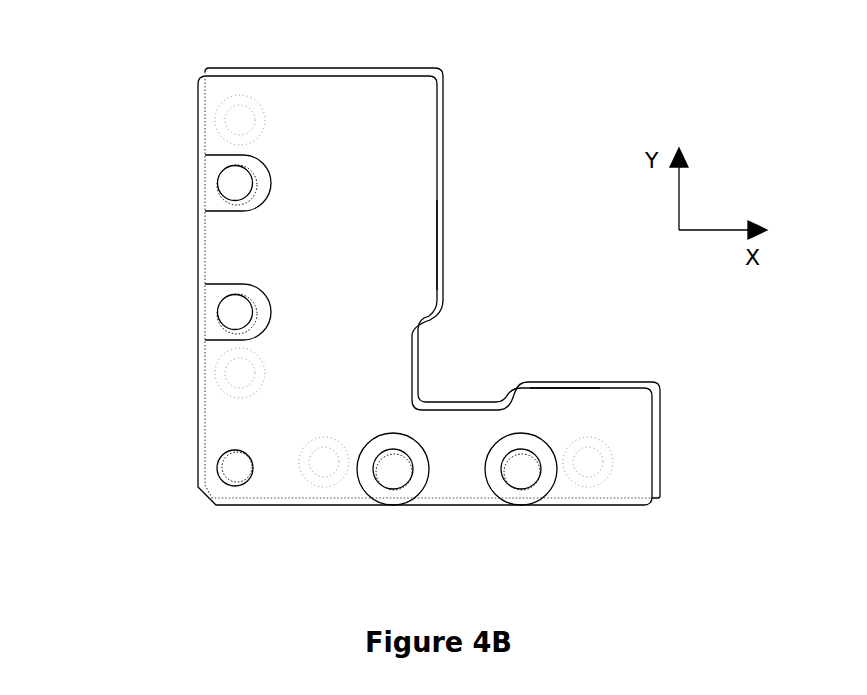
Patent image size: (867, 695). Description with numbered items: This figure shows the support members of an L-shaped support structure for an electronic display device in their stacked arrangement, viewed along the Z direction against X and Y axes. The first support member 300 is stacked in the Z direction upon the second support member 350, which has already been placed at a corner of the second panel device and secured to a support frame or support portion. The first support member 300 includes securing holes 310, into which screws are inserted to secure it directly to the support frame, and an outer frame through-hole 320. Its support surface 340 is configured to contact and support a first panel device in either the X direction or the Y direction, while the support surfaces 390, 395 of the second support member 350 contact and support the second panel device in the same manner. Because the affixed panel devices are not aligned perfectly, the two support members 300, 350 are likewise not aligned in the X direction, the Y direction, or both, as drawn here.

The first support member 300 is at (192, 118).
The securing holes 310 is at (217, 198).
The outer frame through-hole 320 is at (225, 488).
The support surface 340 is at (442, 168).
The second support member 350 is at (233, 63).
The support surface 390 is at (447, 242).
The support surface 395 is at (557, 381).